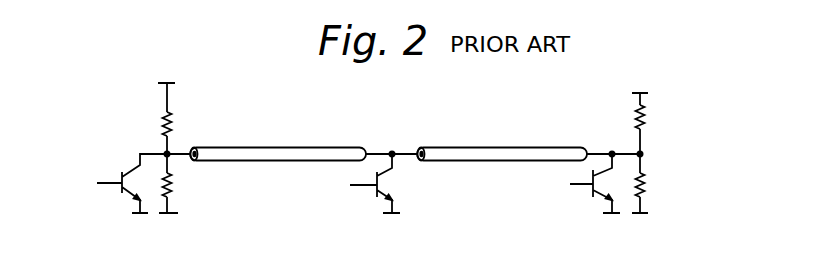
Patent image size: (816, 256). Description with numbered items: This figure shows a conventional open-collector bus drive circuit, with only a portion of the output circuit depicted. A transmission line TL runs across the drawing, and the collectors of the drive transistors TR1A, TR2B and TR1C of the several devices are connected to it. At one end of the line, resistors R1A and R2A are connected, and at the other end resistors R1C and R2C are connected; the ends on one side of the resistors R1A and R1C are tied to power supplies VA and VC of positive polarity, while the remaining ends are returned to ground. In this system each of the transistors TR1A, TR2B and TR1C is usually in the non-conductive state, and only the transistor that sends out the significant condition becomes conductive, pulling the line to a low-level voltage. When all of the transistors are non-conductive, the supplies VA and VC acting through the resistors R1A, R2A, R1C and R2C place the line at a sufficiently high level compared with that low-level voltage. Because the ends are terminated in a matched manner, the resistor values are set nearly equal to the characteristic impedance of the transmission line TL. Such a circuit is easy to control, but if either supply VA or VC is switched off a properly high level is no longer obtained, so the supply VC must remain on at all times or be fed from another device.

The power supply VA is at (161, 86).
The power supply VC is at (631, 87).
The resistor R1A is at (192, 122).
The resistor R2A is at (191, 193).
The transistor TR1A is at (124, 170).
The transmission line TL is at (315, 147).
The transistor TR2B is at (357, 187).
The transistor TR1C is at (577, 186).
The resistor R1C is at (662, 117).
The resistor R2C is at (663, 193).